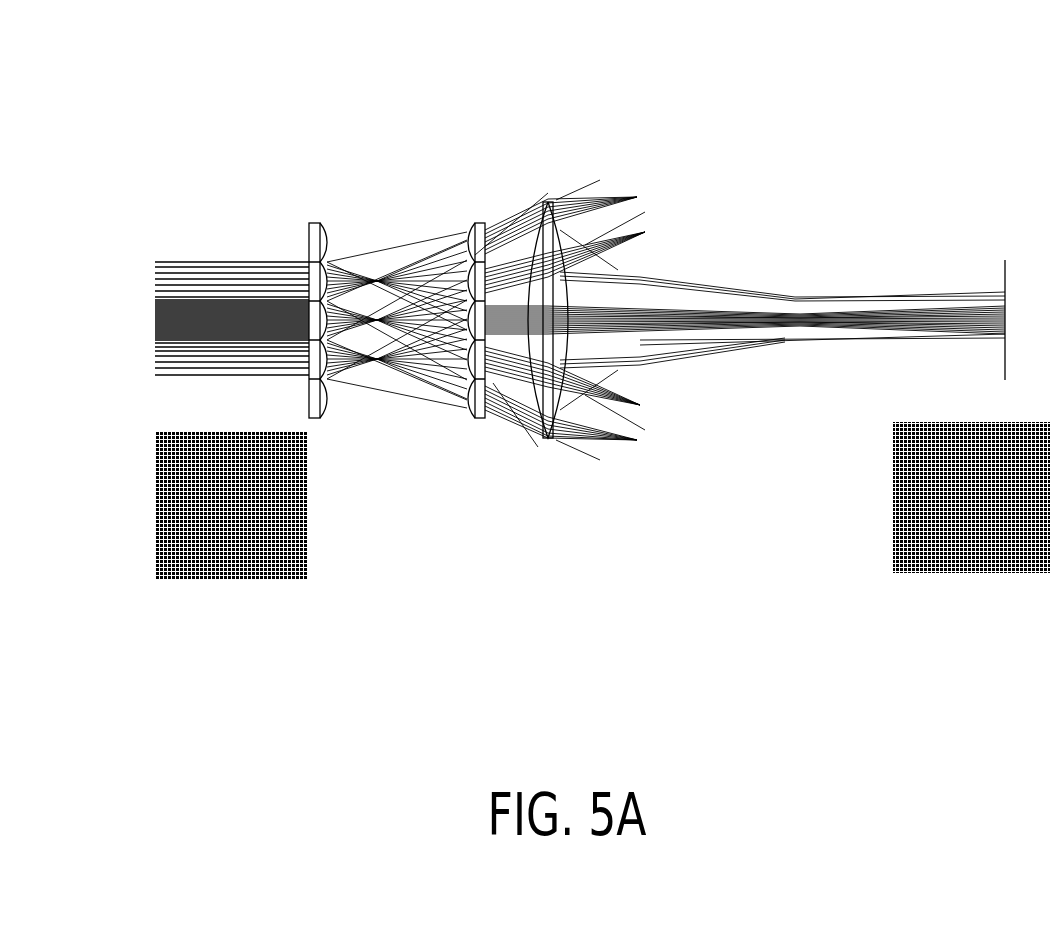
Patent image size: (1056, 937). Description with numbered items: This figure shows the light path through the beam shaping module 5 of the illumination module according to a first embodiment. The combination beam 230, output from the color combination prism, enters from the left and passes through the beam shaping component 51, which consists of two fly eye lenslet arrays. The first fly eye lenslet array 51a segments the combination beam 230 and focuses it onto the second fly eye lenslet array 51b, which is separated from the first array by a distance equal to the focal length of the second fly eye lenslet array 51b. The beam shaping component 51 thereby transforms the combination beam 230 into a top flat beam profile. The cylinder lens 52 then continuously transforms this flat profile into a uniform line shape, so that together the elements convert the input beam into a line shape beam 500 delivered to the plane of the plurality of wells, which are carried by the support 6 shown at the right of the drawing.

The beam shaping module 5 is at (398, 80).
The beam shaping component 51 is at (325, 142).
The first fly eye lenslet array 51a is at (312, 222).
The second fly eye lenslet array 51b is at (473, 222).
The cylinder lens 52 is at (547, 200).
The combination beam 230 is at (233, 262).
The line shape beam 500 is at (869, 298).
The support 6 is at (1005, 258).